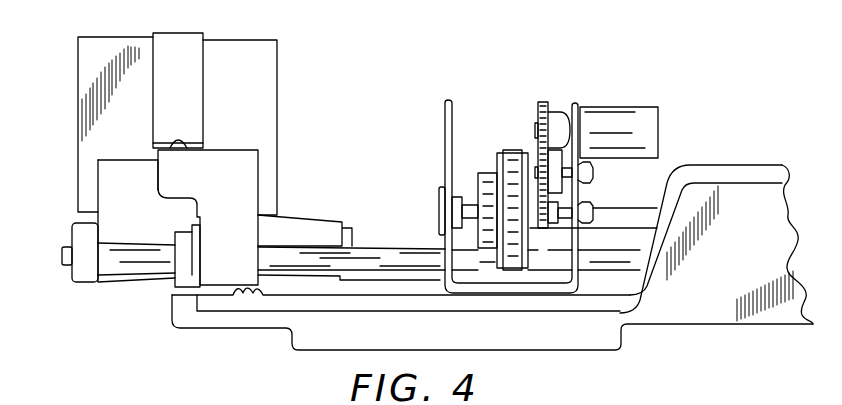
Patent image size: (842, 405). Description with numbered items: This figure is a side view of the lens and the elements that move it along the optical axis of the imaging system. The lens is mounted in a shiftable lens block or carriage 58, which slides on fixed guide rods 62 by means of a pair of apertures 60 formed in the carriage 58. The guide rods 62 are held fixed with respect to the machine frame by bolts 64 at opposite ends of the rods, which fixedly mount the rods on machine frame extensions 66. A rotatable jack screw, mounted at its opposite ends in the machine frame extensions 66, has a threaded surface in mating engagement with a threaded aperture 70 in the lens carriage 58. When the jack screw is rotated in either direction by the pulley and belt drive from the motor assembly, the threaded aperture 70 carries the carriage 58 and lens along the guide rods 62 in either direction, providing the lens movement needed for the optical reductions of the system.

The lens carriage 58 is at (255, 96).
The apertures 60 is at (173, 275).
The guide rods 62 is at (115, 252).
The bolts 64 is at (72, 240).
The machine frame extensions 66 is at (718, 187).
The threaded aperture 70 is at (222, 163).